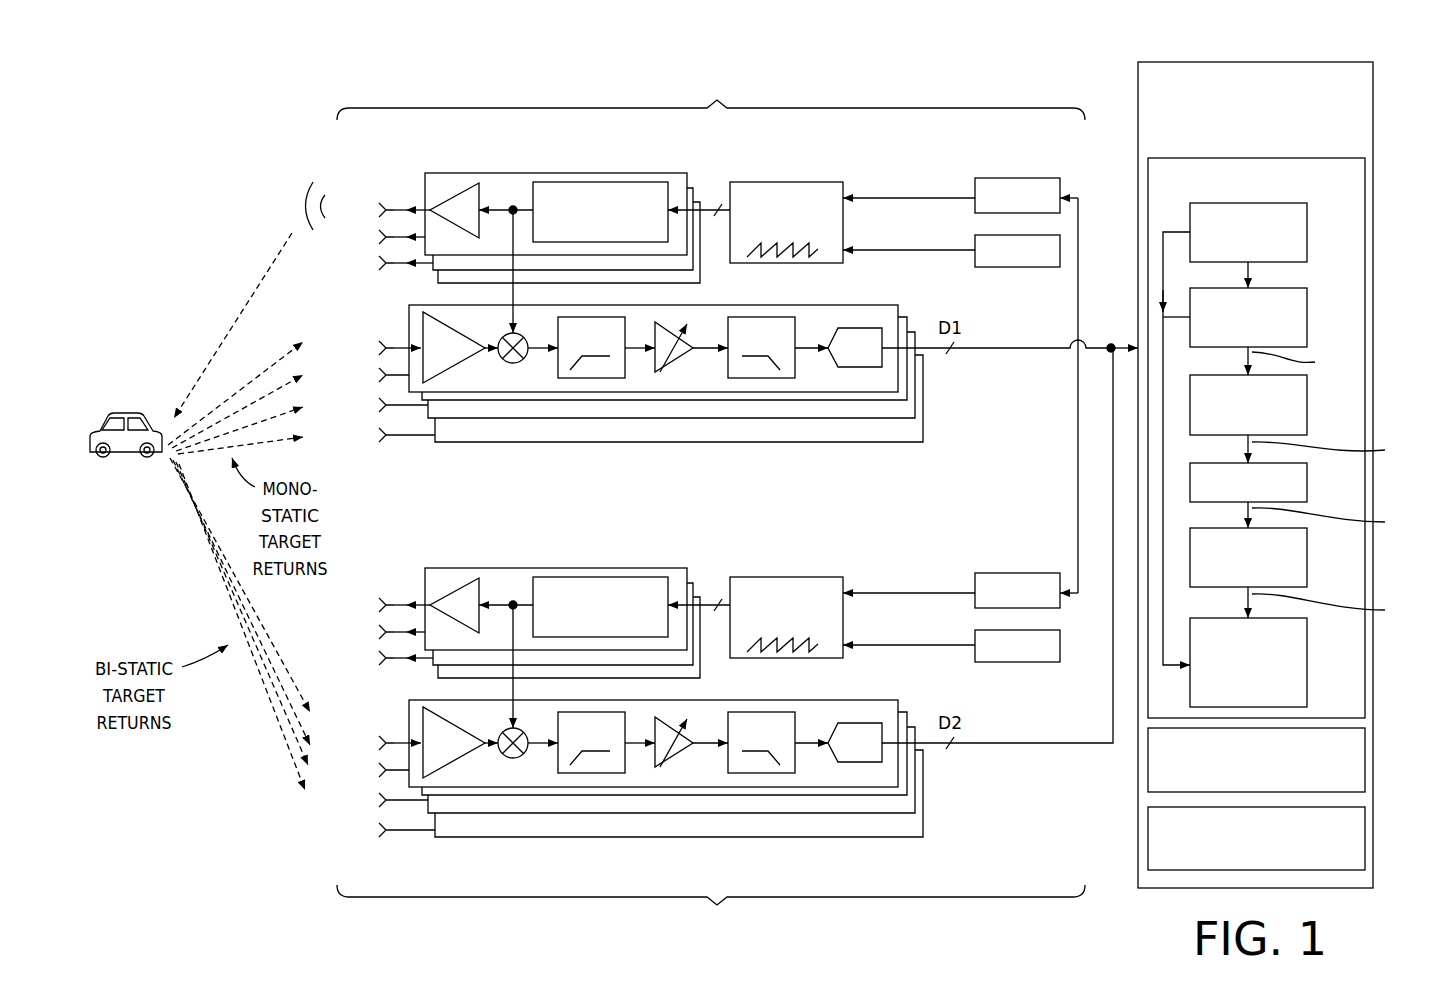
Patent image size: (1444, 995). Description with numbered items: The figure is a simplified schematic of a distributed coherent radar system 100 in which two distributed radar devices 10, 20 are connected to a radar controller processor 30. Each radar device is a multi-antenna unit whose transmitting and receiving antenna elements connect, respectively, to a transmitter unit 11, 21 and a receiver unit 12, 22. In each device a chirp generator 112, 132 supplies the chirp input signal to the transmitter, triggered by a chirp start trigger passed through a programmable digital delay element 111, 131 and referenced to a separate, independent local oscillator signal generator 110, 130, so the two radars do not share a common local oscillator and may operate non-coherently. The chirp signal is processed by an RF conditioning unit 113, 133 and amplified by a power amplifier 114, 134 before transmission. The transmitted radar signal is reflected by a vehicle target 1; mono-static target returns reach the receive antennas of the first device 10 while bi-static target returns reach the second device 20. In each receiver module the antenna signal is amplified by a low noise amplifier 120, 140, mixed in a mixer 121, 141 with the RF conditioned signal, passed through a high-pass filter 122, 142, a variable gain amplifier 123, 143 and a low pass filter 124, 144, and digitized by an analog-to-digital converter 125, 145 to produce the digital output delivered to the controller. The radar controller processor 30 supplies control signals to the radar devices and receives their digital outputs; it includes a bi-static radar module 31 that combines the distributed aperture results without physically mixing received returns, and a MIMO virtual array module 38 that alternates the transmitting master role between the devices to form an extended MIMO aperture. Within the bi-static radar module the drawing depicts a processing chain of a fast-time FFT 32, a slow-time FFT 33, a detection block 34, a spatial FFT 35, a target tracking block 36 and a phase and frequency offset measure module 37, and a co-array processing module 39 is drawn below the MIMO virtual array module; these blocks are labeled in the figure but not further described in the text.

The distributed coherent radar system 100 is at (228, 136).
The vehicle target 1 is at (119, 510).
The distributed radar device 10 is at (703, 92).
The distributed radar device 20 is at (703, 563).
The transmitter unit 11 is at (545, 173).
The receiver unit 12 is at (765, 305).
The transmitter unit 21 is at (557, 630).
The receiver unit 22 is at (666, 777).
The local oscillator signal generator 110 is at (975, 238).
The programmable digital delay element 111 is at (1035, 178).
The chirp generator 112 is at (762, 182).
The RF conditioning unit 113 is at (632, 182).
The power amplifier 114 is at (460, 186).
The low noise amplifier 120 is at (452, 365).
The mixer 121 is at (518, 363).
The high-pass filter 122 is at (607, 378).
The variable gain amplifier 123 is at (680, 360).
The low pass filter 124 is at (760, 378).
The analog-to-digital converter 125 is at (860, 367).
The local oscillator signal generator 130 is at (981, 636).
The programmable digital delay element 131 is at (1015, 572).
The chirp generator 132 is at (786, 589).
The RF conditioning unit 133 is at (610, 585).
The power amplifier 134 is at (431, 583).
The low noise amplifier 140 is at (455, 796).
The mixer 141 is at (525, 807).
The high-pass filter 142 is at (600, 799).
The variable gain amplifier 143 is at (680, 801).
The low pass filter 144 is at (761, 799).
The analog-to-digital converter 145 is at (855, 804).
The radar controller processor 30 is at (1239, 149).
The bi-static radar module 31 is at (1343, 193).
The fast-time FFT 32 is at (1307, 250).
The slow-time FFT 33 is at (1307, 318).
The detection module 34 is at (1307, 420).
The spatial FFT 35 is at (1307, 475).
The target tracking module 36 is at (1307, 572).
The phase/frequency offset measure module 37 is at (1307, 672).
The MIMO virtual array module 38 is at (1365, 758).
The co-array processing module 39 is at (1365, 827).